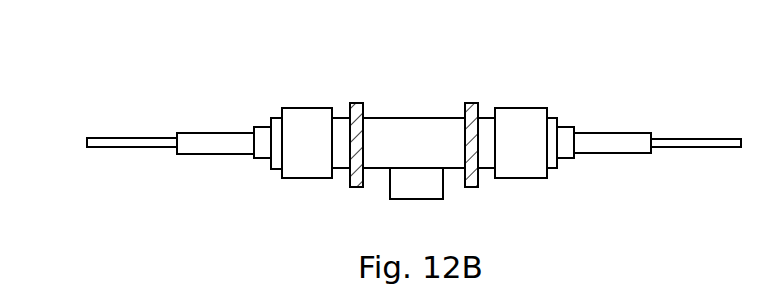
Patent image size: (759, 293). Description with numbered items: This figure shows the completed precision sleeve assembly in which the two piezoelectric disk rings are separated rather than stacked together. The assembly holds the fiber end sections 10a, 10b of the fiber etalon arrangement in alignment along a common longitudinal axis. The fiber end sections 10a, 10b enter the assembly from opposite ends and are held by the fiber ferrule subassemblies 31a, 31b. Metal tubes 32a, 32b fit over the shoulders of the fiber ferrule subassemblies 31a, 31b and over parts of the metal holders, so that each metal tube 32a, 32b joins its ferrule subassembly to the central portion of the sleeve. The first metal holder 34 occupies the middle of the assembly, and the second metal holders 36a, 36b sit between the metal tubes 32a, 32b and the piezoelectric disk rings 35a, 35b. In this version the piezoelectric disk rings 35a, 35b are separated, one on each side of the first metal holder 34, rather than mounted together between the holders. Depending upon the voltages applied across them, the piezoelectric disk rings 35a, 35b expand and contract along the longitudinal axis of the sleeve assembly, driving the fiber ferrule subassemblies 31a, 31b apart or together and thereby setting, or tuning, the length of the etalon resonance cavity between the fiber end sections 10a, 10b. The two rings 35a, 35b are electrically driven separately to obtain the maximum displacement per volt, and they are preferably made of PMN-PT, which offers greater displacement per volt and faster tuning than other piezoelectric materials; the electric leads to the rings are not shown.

The fiber end section 10a is at (131, 117).
The fiber end section 10b is at (706, 147).
The fiber ferrule subassembly 31a is at (253, 170).
The fiber ferrule subassembly 31b is at (567, 112).
The metal tube 32a is at (297, 117).
The metal tube 32b is at (535, 172).
The first metal holder 34 is at (424, 132).
The piezoelectric disk ring 35a is at (359, 105).
The piezoelectric disk ring 35b is at (470, 183).
The second metal holder 36a is at (340, 165).
The second metal holder 36b is at (490, 122).